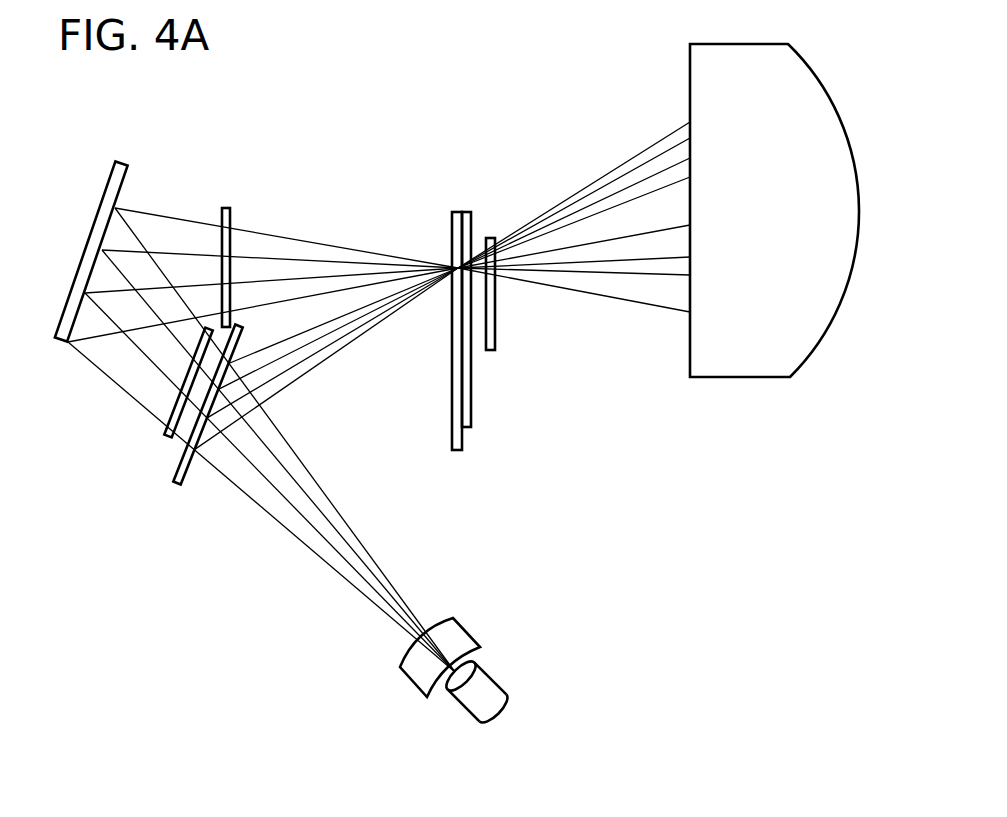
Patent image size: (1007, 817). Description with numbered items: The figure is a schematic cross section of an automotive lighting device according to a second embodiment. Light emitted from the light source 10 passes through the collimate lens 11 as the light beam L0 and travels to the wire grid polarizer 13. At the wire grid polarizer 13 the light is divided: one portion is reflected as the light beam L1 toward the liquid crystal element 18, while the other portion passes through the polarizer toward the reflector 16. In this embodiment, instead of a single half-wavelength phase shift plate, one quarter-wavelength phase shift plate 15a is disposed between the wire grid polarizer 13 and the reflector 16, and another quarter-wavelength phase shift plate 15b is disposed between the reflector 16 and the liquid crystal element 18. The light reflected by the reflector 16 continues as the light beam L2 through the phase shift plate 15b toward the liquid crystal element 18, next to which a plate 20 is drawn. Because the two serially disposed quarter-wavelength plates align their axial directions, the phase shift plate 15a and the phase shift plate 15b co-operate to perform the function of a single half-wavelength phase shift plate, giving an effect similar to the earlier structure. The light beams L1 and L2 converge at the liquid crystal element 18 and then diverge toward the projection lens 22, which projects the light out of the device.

The light source 10 is at (501, 685).
The collimate lens 11 is at (462, 624).
The wire grid polarizer 13 is at (176, 487).
The one (λ/4) phase shift plate 15a is at (168, 434).
The another (λ/4) phase shift plate 15b is at (230, 216).
The reflector 16 is at (120, 160).
The liquid crystal element 18 is at (464, 197).
The diffusion plate 20 is at (497, 342).
The projection lens 22 is at (831, 78).
The light beam emitted from light source L0 is at (303, 493).
The light beam reflected by beam splitter L1 is at (293, 353).
The light beam reflected by mirror L2 is at (177, 343).